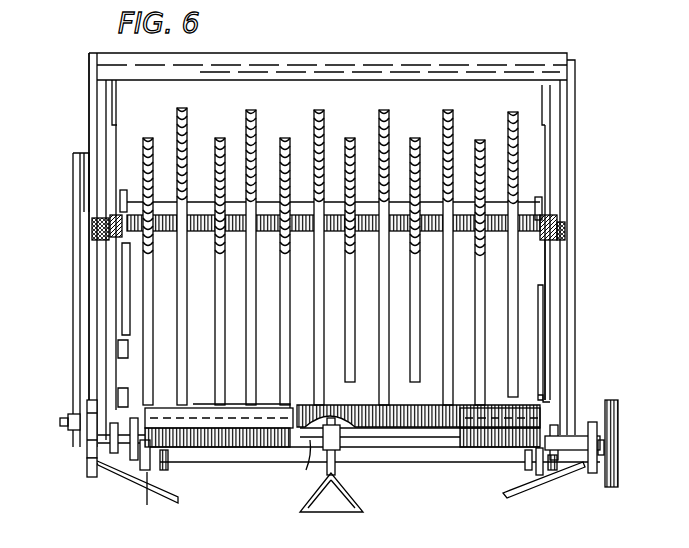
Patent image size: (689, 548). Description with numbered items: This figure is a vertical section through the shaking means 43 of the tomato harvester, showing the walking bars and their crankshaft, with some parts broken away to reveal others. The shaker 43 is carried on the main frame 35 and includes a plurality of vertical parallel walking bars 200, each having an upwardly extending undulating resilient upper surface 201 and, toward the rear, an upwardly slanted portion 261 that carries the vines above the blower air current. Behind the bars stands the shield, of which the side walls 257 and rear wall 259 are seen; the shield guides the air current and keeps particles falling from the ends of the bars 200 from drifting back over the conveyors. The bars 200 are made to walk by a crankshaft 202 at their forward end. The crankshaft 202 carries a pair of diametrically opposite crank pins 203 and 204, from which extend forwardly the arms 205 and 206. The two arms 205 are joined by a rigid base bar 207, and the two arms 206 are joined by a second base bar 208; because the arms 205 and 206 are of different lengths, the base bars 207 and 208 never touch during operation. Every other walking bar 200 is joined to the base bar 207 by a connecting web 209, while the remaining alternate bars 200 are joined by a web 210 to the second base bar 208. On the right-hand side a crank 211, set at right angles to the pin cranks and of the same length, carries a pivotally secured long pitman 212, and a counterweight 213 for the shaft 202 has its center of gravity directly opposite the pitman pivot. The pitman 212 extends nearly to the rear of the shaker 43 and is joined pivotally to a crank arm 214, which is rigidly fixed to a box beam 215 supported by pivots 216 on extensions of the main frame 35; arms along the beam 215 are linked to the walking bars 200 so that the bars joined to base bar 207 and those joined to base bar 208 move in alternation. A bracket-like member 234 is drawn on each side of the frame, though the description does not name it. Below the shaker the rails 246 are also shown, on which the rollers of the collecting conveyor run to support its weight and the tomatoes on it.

The shaking means 43 is at (498, 56).
The side walls 257 is at (116, 101).
The rear wall 259 is at (372, 108).
The upwardly slanted portion 261 is at (250, 117).
The undulating resilient upper surface 201 is at (283, 172).
The crank arm 214 is at (85, 180).
The pivots 216 is at (110, 203).
The pitman 212 is at (73, 297).
The bracket 234 is at (118, 316).
The rails 246 is at (540, 306).
The main frame 35 is at (92, 352).
The walking bars 200 is at (217, 298).
The box beam 215 is at (449, 262).
The web 210 is at (313, 358).
The connecting web 209 is at (150, 386).
The crank 211 is at (70, 422).
The crankshaft 202 is at (95, 447).
The counterweight 213 is at (90, 480).
The crank pin 203 is at (155, 470).
The arms 205 is at (530, 482).
The crank pin 204 is at (218, 418).
The arms 206 is at (190, 448).
The base bar 207 is at (243, 438).
The second base bar 208 is at (375, 420).